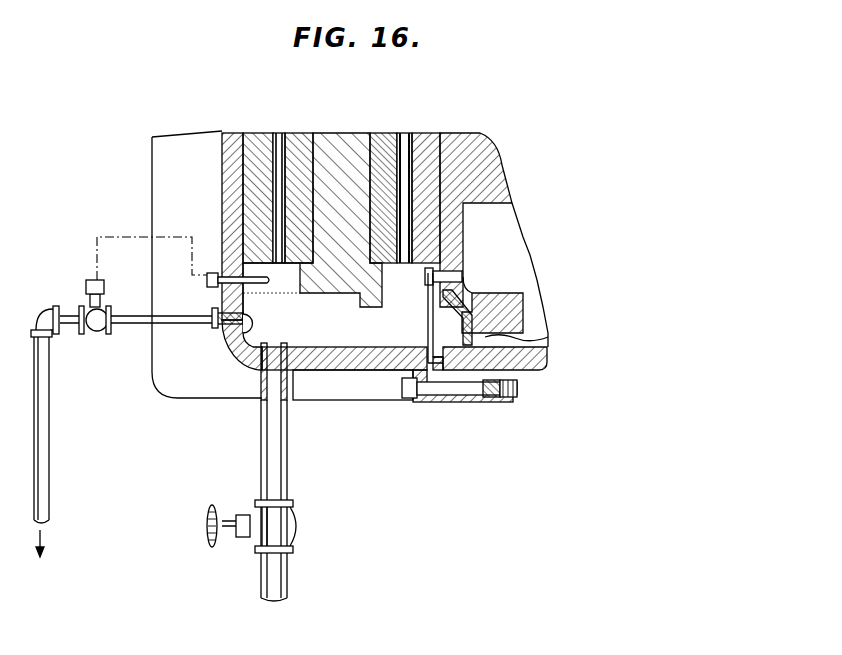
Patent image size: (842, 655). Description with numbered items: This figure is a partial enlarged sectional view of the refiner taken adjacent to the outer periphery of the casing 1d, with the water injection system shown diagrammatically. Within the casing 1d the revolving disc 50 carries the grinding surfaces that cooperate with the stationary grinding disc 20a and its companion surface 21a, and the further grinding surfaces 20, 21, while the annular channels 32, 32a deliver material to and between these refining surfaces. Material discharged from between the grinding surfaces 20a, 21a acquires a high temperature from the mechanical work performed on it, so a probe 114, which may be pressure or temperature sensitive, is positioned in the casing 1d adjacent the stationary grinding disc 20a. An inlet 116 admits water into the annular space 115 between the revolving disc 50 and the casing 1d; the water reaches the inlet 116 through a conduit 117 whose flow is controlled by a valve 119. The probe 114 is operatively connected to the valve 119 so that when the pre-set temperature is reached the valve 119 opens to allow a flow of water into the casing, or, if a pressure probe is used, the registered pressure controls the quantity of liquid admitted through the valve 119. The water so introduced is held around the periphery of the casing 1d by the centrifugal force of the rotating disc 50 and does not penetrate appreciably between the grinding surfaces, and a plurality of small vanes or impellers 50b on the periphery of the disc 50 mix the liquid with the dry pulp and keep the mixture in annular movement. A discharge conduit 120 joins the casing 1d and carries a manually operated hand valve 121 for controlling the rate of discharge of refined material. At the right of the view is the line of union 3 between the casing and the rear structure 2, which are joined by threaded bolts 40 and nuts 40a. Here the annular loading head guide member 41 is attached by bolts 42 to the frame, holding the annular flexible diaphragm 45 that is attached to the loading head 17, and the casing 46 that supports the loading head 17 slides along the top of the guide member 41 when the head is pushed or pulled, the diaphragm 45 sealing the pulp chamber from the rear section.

The casing 1d is at (370, 358).
The rear structure 2 is at (547, 357).
The line of union 3 is at (470, 403).
The loading head 17 is at (463, 220).
The grinding surface 20 is at (427, 135).
The stationary grinding disc 20a is at (255, 140).
The grinding surface 21 is at (380, 135).
The grinding surface 21a is at (303, 140).
The annular channel 32 is at (407, 132).
The annular channel 32a is at (279, 134).
The threaded bolt 40 is at (495, 403).
The nut 40a is at (527, 407).
The annular loading head guide member 41 is at (548, 340).
The bolt 42 is at (437, 403).
The annular flexible diaphragm 45 is at (462, 284).
The casing 46 is at (502, 295).
The revolving disc 50 is at (345, 135).
The vanes or impellers 50b is at (347, 300).
The probe 114 is at (280, 284).
The annular space 115 is at (298, 337).
The inlet 116 is at (228, 353).
The conduit 117 is at (192, 319).
The valve 119 is at (97, 331).
The discharge conduit 120 is at (273, 441).
The hand valve 121 is at (207, 523).